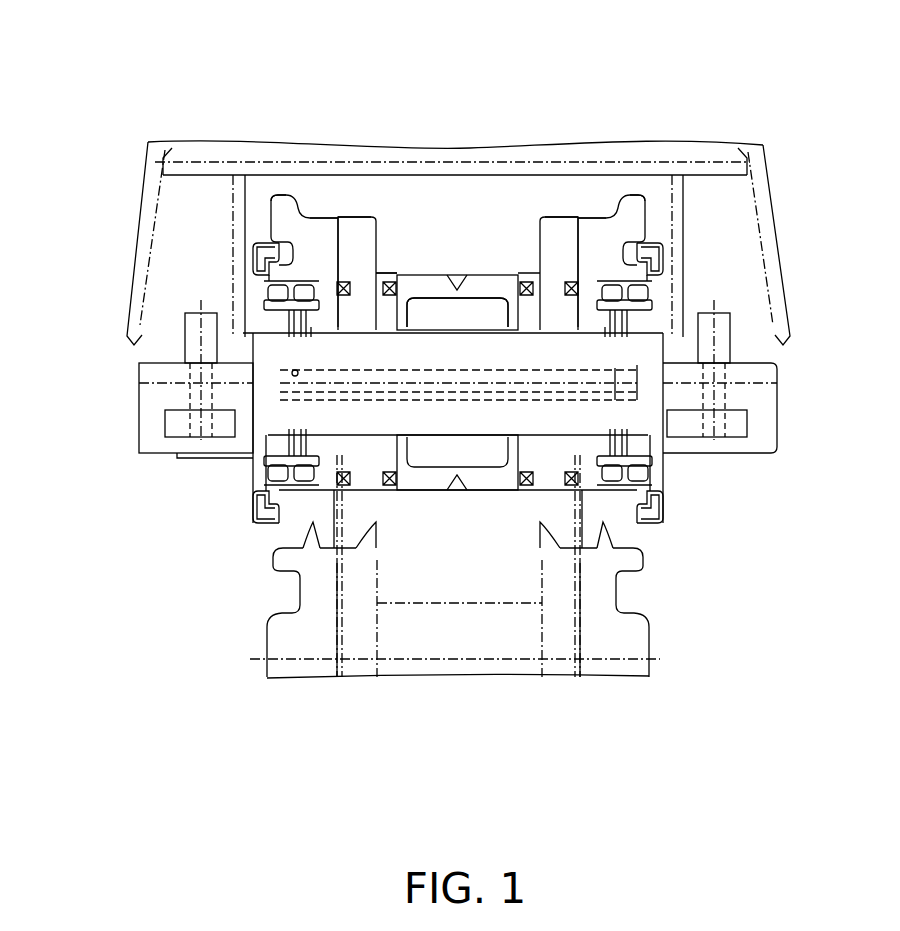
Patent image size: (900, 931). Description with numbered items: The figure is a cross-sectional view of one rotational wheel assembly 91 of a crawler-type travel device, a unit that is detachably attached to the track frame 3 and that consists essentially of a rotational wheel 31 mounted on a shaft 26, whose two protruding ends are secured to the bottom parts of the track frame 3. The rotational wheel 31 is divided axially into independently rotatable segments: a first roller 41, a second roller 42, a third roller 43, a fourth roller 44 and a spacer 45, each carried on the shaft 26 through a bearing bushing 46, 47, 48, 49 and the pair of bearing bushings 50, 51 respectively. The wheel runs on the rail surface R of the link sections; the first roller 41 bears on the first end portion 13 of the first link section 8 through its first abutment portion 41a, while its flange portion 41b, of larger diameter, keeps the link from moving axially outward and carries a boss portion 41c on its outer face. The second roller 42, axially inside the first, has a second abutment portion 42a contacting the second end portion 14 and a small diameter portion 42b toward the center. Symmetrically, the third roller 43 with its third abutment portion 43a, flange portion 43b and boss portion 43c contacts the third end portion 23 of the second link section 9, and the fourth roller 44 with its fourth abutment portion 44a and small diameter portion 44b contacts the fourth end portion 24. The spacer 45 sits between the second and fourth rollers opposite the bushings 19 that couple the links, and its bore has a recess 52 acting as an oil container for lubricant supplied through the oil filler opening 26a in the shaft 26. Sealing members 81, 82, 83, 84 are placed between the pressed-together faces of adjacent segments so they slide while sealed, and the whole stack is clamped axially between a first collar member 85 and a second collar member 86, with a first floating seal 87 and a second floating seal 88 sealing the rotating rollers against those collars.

The track frame 3 is at (815, 218).
The first link section 8 is at (590, 696).
The second link section 9 is at (337, 696).
The first end portion 13 is at (607, 587).
The second end portion 14 is at (553, 573).
The bushing 19 is at (471, 668).
The third end portion 23 is at (308, 580).
The fourth end portion 24 is at (362, 580).
The shaft 26 is at (466, 418).
The oil filler opening 26a is at (247, 463).
The rotational wheel 31 is at (478, 205).
The first roller 41 is at (612, 178).
The first abutment portion 41a is at (591, 217).
The flange portion 41b is at (637, 195).
The boss portion 41c is at (643, 263).
The second roller 42 is at (540, 212).
The second abutment portion 42a is at (548, 207).
The small diameter portion 42b is at (527, 273).
The third roller 43 is at (300, 177).
The third abutment portion 43a is at (322, 217).
The flange portion 43b is at (280, 193).
The boss portion 43c is at (272, 263).
The fourth roller 44 is at (377, 204).
The fourth abutment portion 44a is at (353, 215).
The small diameter portion 44b is at (390, 273).
The spacer 45 is at (447, 256).
The bearing bushing 46 is at (690, 336).
The bearing bushing 47 is at (747, 367).
The bearing bushing 48 is at (258, 337).
The bearing bushing 49 is at (165, 373).
The bearing bushing 50 is at (408, 318).
The bearing bushing 51 is at (507, 318).
The recess 52 is at (472, 300).
The sealing member 81 is at (600, 282).
The sealing member 82 is at (290, 279).
The sealing member 83 is at (505, 273).
The sealing member 84 is at (412, 273).
The first collar member 85 is at (658, 305).
The second collar member 86 is at (257, 302).
The first floating seal 87 is at (655, 485).
The second floating seal 88 is at (260, 485).
The rotational wheel assembly 91 is at (800, 530).
The rail surface R is at (642, 539).